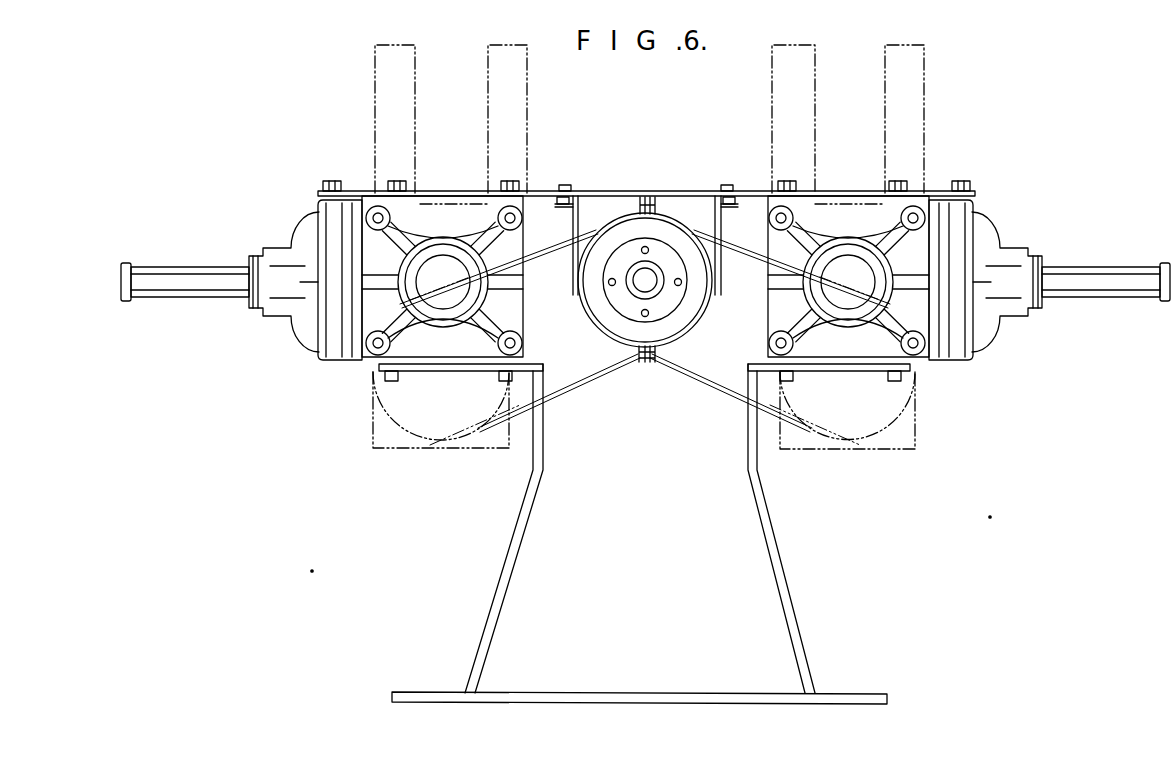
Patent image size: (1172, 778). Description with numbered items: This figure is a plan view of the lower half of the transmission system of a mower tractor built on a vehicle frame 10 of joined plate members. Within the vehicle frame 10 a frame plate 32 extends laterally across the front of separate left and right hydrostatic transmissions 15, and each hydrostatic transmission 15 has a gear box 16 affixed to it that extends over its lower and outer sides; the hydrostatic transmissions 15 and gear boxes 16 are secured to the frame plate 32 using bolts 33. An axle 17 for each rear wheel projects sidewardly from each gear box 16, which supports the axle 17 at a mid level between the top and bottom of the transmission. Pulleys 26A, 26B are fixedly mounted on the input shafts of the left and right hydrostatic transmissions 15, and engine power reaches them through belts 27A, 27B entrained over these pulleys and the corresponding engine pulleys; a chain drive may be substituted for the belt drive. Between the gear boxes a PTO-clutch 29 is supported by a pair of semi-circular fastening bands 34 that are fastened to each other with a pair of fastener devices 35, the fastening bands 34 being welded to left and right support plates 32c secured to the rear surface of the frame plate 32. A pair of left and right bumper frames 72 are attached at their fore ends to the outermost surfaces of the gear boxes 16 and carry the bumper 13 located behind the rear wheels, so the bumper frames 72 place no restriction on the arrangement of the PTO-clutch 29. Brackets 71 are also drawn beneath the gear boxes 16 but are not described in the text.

The vehicle frame 10 is at (500, 98).
The bumper 13 is at (857, 698).
The hydrostatic transmission 15 is at (818, 210).
The gear box 16 is at (398, 342).
The axle 17 is at (215, 283).
The pulley 26A is at (431, 440).
The pulley 26B is at (870, 437).
The belt 27A is at (575, 392).
The belt 27B is at (728, 397).
The PTO-clutch 29 is at (690, 318).
The frame plate 32 is at (604, 190).
The support plate 32c is at (735, 212).
The bolt 33 is at (345, 180).
The fastening band 34 is at (597, 325).
The fastener device 35 is at (657, 205).
The bracket 71 is at (495, 384).
The bumper frame 72 is at (523, 495).